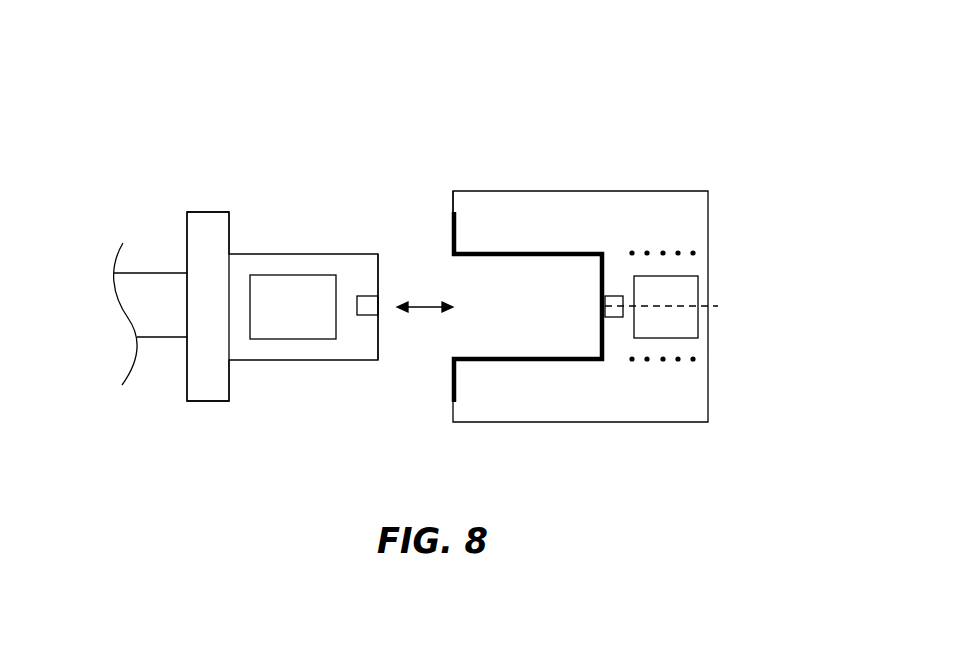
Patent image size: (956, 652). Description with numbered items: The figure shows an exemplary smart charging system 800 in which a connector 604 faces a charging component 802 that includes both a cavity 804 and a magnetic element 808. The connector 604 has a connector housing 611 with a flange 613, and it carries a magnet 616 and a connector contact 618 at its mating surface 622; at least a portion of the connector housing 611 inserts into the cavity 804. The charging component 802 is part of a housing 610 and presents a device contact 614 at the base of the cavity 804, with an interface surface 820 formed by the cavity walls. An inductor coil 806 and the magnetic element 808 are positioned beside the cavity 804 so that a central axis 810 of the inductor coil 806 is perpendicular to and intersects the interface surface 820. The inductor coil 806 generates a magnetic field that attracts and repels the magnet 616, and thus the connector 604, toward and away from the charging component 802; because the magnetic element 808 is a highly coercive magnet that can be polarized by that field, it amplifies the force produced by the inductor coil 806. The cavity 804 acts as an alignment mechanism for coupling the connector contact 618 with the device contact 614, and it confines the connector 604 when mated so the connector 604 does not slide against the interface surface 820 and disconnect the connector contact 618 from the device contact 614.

The smart charging system 800 is at (268, 104).
The connector 604 is at (168, 181).
The connector housing 611 is at (318, 360).
The flange 613 is at (202, 392).
The magnet 616 is at (310, 331).
The connector contact 618 is at (369, 296).
The mating surface 622 is at (382, 262).
The charging component 802 is at (672, 146).
The housing 610 is at (772, 400).
The cavity 804 is at (448, 339).
The inductor coil 806 is at (647, 250).
The magnetic element 808 is at (682, 320).
The central axis 810 is at (686, 306).
The device contact 614 is at (614, 317).
The interface surface 820 is at (452, 212).